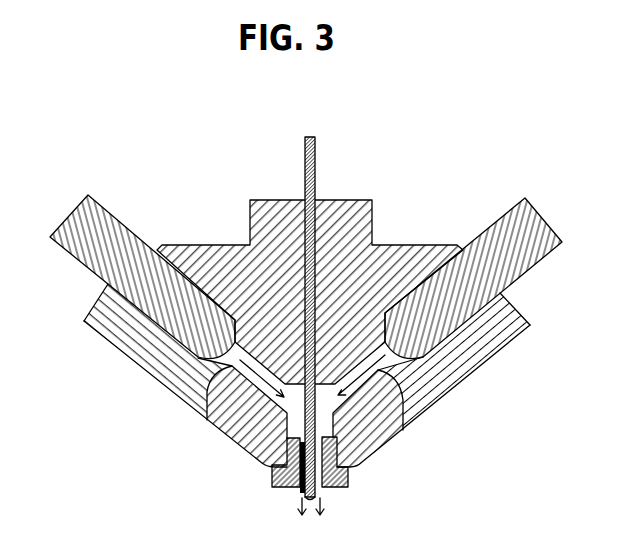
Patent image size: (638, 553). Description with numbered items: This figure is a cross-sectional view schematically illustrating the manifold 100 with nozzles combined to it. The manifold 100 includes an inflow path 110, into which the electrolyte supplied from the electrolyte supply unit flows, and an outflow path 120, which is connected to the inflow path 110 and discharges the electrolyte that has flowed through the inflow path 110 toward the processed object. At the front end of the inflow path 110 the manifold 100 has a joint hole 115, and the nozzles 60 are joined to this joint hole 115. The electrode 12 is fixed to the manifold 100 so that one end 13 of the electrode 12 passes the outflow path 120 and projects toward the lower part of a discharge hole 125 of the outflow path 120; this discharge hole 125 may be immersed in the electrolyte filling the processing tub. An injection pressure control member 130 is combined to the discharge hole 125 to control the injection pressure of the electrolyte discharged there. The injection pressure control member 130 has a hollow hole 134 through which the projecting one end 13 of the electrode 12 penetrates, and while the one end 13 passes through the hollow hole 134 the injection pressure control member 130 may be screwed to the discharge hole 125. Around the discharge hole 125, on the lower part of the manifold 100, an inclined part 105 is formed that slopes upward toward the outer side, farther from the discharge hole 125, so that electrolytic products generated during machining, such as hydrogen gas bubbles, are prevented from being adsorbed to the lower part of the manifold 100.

The manifold 100 is at (153, 160).
The electrode 12 is at (315, 162).
The one end of the electrode 13 is at (311, 521).
The nozzles 60 is at (108, 283).
The inclined part 105 is at (167, 386).
The inflow path 110 is at (207, 425).
The joint hole 115 is at (165, 333).
The outflow path 120 is at (358, 470).
The discharge hole 125 is at (287, 465).
The injection pressure control member 130 is at (277, 487).
The hollow hole 134 is at (298, 496).